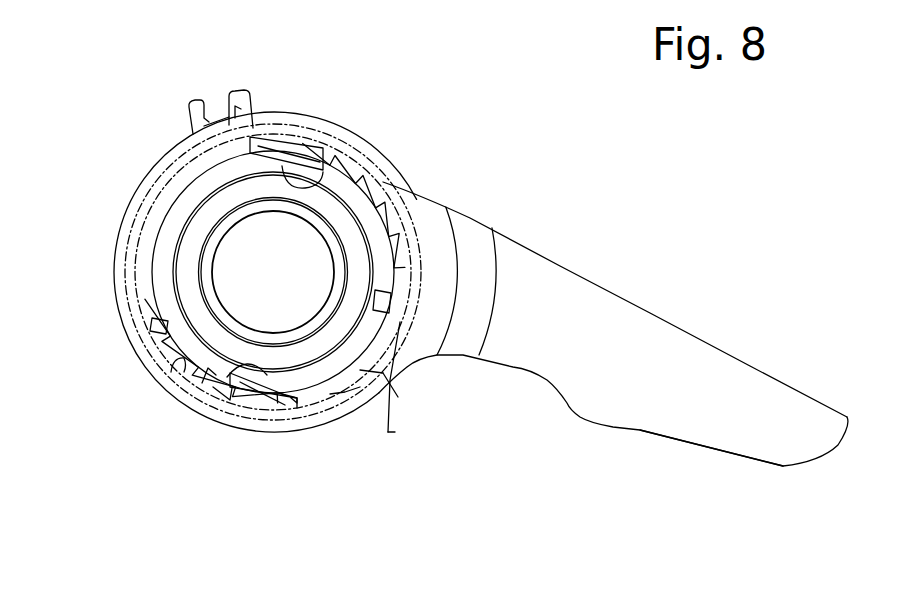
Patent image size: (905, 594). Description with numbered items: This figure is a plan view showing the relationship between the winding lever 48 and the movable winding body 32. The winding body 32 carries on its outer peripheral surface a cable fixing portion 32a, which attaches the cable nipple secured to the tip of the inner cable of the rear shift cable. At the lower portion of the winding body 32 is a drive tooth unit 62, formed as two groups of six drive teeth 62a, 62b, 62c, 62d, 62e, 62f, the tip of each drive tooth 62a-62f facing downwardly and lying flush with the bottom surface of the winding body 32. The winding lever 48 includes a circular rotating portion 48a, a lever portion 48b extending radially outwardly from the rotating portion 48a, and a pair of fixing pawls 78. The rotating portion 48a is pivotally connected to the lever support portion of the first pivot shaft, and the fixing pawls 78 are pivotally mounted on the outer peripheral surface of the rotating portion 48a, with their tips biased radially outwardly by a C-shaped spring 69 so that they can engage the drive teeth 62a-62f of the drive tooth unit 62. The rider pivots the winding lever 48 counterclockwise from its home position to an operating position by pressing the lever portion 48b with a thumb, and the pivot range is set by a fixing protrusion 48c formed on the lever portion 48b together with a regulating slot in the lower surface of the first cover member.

The winding body 32 is at (403, 408).
The cable fixing portion 32a is at (392, 392).
The winding lever 48 is at (511, 403).
The rotating portion 48a is at (415, 183).
The lever portion 48b is at (641, 388).
The fixing protrusion 48c is at (473, 247).
The drive tooth unit 62 is at (135, 305).
The drive tooth 62a is at (150, 343).
The drive tooth 62b is at (157, 387).
The drive tooth 62c is at (187, 410).
The drive tooth 62d is at (213, 427).
The drive tooth 62e is at (281, 400).
The drive tooth 62f is at (345, 400).
The C-shaped spring 69 is at (127, 255).
The fixing pawl 78 is at (296, 160).